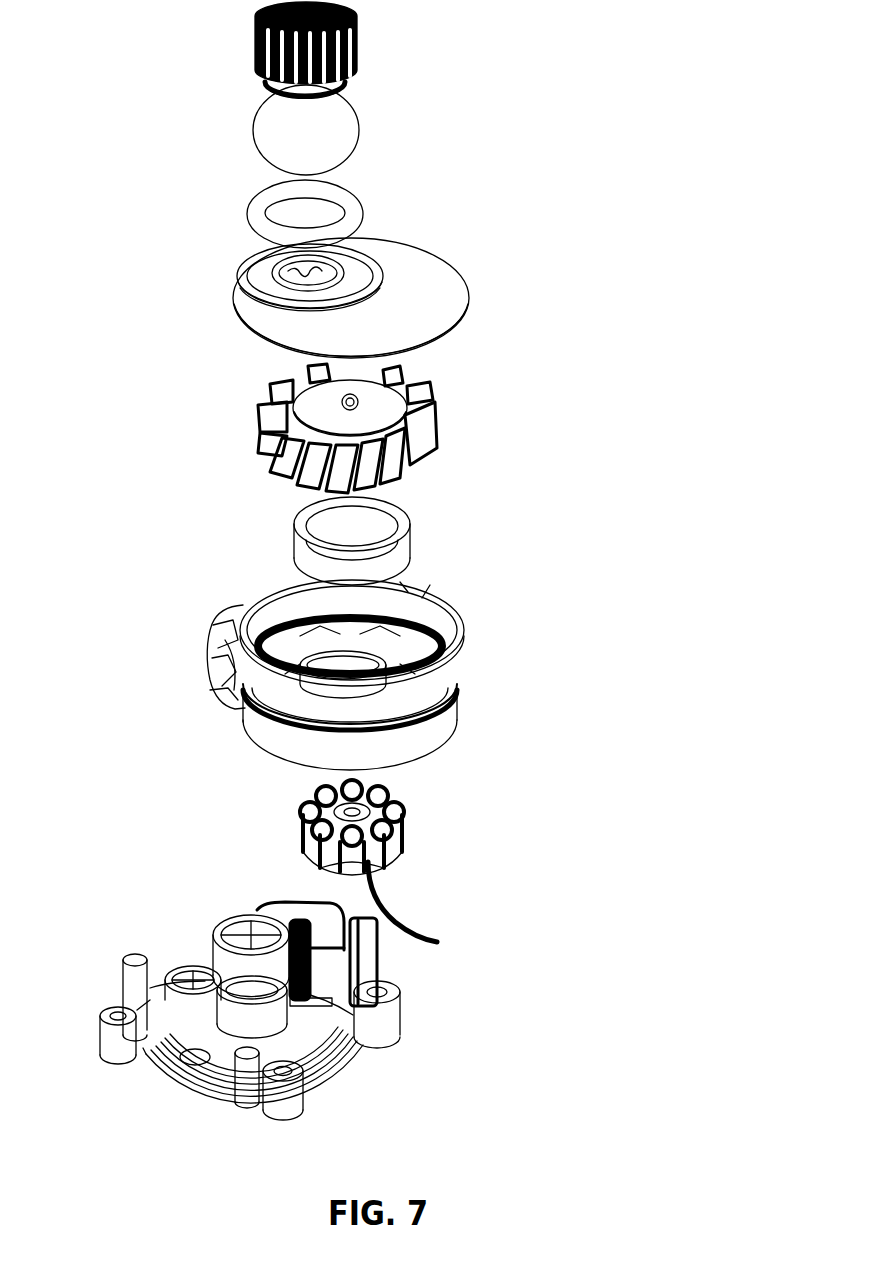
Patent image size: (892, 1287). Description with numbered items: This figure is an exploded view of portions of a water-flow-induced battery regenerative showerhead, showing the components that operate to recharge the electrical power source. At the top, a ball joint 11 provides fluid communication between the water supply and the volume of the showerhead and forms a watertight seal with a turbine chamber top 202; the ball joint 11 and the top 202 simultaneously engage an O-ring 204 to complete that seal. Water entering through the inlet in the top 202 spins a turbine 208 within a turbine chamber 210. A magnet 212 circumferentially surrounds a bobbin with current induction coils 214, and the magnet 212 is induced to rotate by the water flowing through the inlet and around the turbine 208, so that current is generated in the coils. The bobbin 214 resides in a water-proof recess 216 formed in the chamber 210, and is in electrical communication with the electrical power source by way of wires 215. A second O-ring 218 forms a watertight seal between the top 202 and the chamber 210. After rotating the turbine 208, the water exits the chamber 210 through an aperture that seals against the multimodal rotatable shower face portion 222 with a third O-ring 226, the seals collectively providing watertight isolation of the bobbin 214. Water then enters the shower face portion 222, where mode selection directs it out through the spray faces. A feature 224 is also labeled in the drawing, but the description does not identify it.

The ball joint 11 is at (360, 107).
The O-ring 204 is at (365, 205).
The turbine chamber top 202 is at (468, 269).
The turbine 208 is at (447, 417).
The magnet 212 is at (417, 527).
The water-proof recess 216 is at (420, 623).
The second O-ring 218 is at (463, 620).
The turbine chamber 210 is at (458, 714).
The bobbin with current induction coils 214 is at (403, 832).
The wires 215 is at (440, 930).
The multimodal rotatable shower face portion 222 is at (403, 1025).
The third O-ring 226 is at (237, 916).
The boss 224 is at (188, 967).